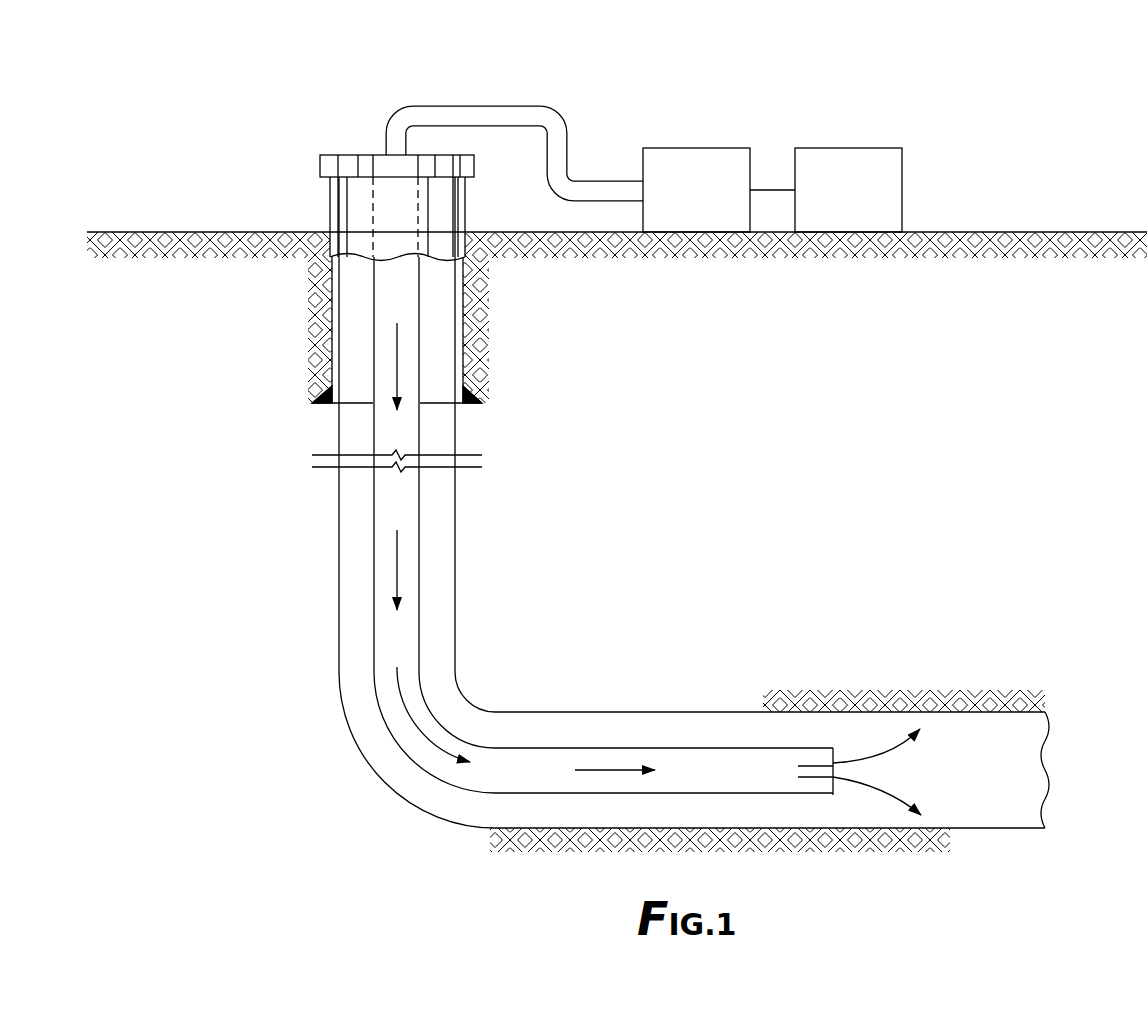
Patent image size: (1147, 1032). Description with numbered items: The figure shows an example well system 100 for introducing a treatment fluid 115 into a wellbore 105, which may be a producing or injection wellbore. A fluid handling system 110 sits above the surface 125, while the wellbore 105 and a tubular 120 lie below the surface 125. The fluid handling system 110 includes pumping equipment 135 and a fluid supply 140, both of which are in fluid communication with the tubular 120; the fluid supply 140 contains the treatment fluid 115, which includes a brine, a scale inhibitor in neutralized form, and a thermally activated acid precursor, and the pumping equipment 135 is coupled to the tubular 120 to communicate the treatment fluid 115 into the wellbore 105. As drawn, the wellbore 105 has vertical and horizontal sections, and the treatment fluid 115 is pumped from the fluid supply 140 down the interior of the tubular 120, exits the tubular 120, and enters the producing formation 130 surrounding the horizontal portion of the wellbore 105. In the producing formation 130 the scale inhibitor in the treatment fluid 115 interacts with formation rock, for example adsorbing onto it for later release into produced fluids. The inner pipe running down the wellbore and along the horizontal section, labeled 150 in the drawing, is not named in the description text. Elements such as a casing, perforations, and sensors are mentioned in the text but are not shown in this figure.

The well system 100 is at (171, 100).
The wellbore 105 is at (339, 515).
The fluid handling system 110 is at (670, 125).
The treatment fluid 115 is at (399, 345).
The tubular 120 is at (373, 333).
The surface 125 is at (1057, 232).
The producing formation 130 is at (953, 630).
The pumping equipment 135 is at (728, 148).
The fluid supply 140 is at (877, 148).
The tubing string 150 is at (415, 726).